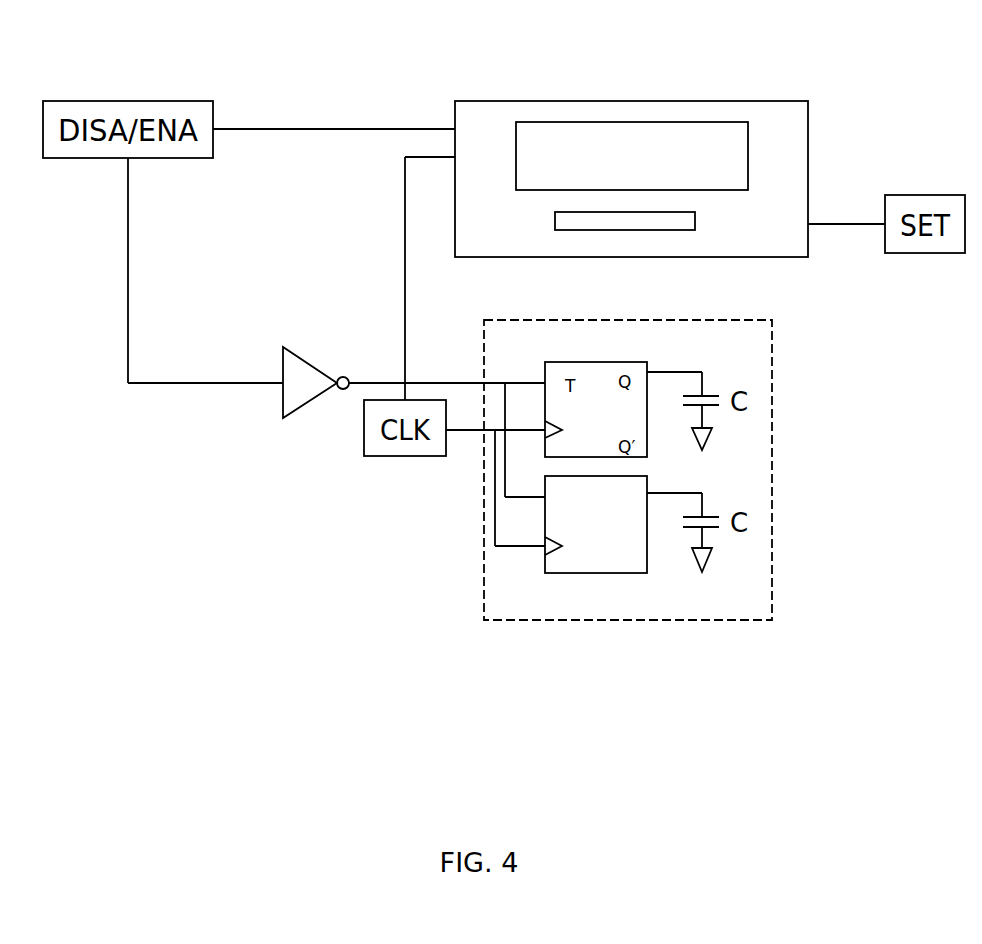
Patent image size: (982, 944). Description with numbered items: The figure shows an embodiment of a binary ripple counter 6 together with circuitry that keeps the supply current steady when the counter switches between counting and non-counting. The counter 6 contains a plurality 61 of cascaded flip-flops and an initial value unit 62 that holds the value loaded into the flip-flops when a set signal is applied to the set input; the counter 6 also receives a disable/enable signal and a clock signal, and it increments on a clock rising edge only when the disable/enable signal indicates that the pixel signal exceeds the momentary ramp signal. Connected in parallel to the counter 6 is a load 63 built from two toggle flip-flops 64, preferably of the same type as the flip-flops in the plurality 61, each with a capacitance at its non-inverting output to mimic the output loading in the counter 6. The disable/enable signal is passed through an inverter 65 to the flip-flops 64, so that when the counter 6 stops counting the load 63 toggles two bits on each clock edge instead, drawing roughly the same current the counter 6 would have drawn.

The binary ripple counter 6 is at (788, 257).
The plurality of cascaded flip-flops 61 is at (557, 137).
The initial value unit 62 is at (575, 223).
The load 63 is at (750, 622).
The toggle flip-flops 64 is at (598, 535).
The inverter 65 is at (295, 385).